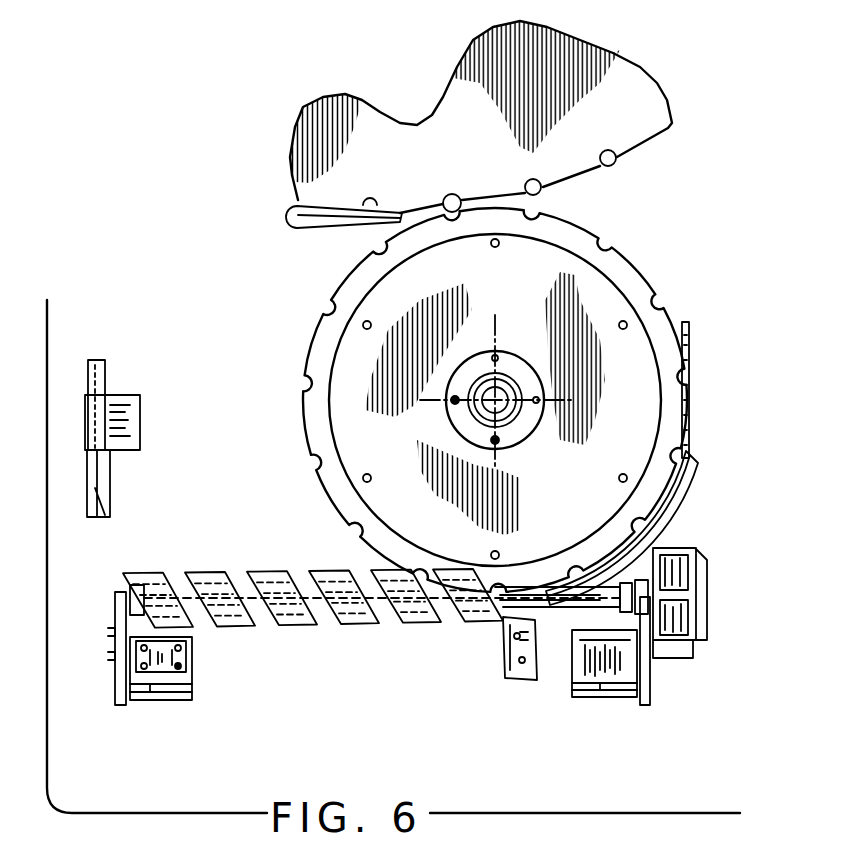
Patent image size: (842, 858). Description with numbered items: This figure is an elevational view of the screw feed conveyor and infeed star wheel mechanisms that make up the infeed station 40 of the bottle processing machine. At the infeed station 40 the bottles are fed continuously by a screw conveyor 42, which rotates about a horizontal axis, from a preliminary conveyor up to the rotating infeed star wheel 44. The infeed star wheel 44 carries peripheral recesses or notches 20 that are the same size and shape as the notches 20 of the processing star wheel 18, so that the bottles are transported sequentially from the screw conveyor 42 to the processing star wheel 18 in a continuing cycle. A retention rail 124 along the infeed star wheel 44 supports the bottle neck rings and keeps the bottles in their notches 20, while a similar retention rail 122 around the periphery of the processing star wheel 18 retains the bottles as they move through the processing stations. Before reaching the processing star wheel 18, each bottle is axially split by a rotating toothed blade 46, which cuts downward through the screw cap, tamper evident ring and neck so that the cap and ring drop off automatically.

The processing star wheel 18 is at (640, 90).
The recesses or notches 20 is at (615, 163).
The retention rail 122 is at (297, 228).
The infeed star wheel 44 is at (630, 272).
The rotating toothed blade 46 is at (690, 414).
The retention rail 124 is at (690, 492).
The screw conveyor 42 is at (432, 628).
The infeed station 40 is at (308, 700).